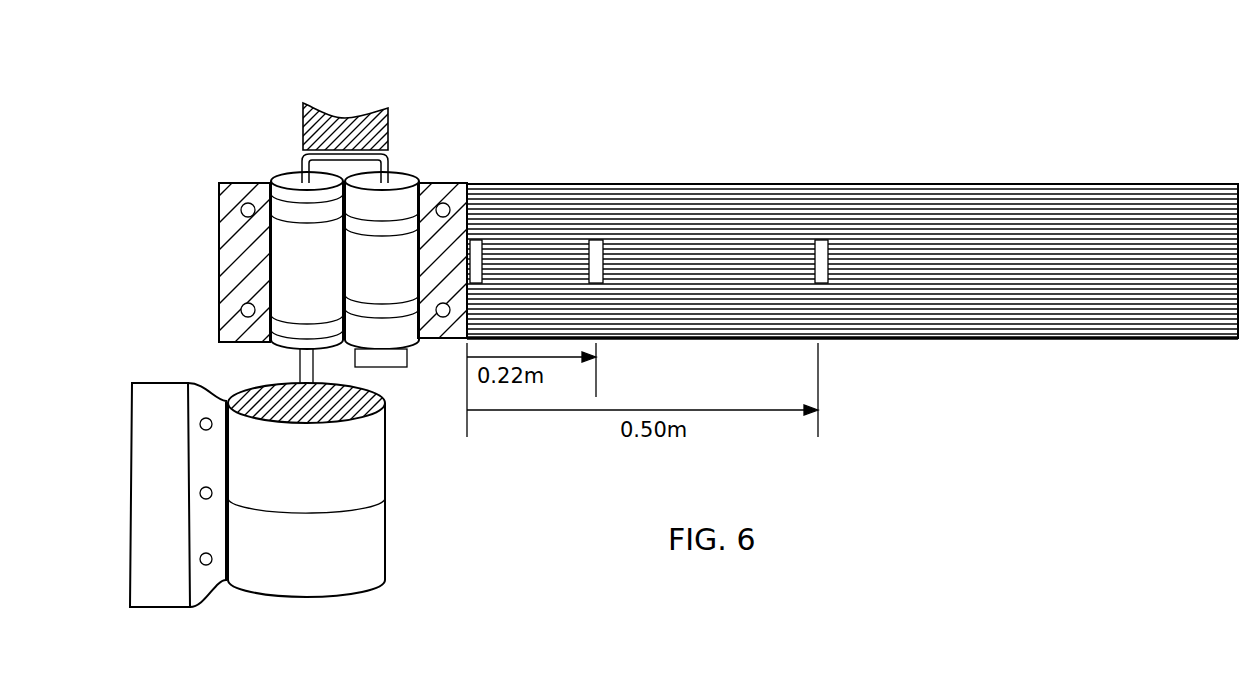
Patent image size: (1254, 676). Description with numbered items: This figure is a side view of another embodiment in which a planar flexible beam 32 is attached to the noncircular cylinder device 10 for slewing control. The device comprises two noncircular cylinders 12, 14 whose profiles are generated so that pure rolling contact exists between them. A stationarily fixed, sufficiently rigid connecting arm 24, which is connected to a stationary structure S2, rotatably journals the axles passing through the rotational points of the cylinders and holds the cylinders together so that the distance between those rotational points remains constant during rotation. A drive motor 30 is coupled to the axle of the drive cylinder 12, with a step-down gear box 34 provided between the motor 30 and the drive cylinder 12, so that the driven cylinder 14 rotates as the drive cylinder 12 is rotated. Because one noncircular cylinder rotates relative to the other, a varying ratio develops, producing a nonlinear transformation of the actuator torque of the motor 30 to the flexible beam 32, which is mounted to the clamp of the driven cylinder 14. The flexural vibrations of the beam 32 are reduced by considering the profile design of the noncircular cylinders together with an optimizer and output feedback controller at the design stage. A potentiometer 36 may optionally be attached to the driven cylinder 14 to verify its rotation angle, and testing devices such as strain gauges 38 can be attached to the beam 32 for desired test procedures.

The noncircular cylinder device 10 is at (187, 146).
The drive noncircular cylinder 12 is at (315, 287).
The driven noncircular cylinder 14 is at (393, 287).
The connecting arm 24 is at (390, 163).
The stationary structure S2 is at (344, 107).
The drive motor 30 is at (322, 558).
The flexible beam 32 is at (1102, 184).
The step-down gear box 34 is at (322, 483).
The potentiometer 36 is at (383, 362).
The strain gauges 38 is at (603, 250).